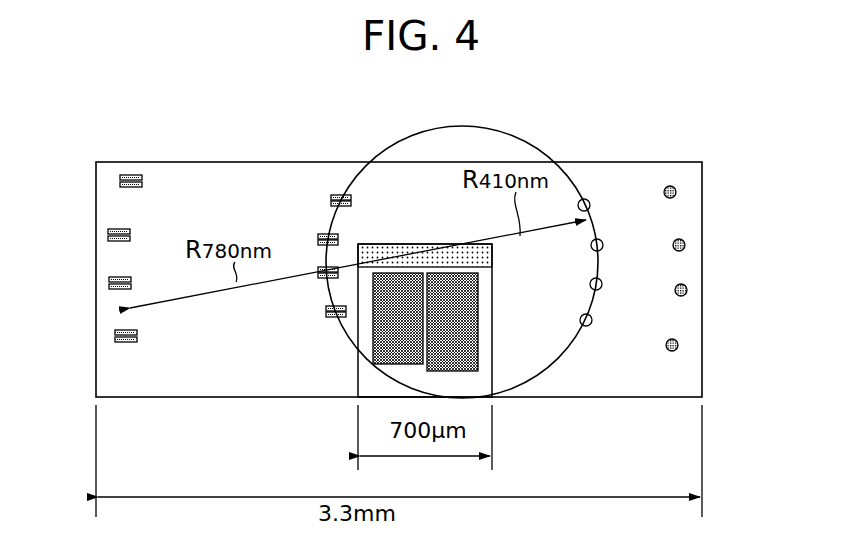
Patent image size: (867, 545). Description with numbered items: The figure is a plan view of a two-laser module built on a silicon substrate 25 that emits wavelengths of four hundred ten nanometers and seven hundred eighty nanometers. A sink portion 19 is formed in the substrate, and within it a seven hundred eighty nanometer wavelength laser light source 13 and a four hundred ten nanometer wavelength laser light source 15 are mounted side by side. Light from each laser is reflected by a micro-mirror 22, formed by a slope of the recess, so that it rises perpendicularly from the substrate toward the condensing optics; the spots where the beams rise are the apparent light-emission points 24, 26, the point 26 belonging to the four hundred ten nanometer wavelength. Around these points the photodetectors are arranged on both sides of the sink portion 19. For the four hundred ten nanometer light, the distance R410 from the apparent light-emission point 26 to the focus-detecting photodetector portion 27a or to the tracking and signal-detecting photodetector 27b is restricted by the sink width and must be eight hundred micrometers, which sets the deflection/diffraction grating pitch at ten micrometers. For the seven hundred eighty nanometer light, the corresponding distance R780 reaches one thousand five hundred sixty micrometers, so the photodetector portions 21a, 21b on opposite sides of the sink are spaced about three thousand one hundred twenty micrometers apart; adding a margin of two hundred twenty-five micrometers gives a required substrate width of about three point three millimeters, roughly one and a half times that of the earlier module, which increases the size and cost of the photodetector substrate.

The 780 nm wavelength laser light source 13 is at (373, 336).
The 410 nm wavelength laser light source 15 is at (478, 342).
The sink portion 19 is at (372, 381).
The photodetector portion for 780 nm wavelength 21a is at (109, 282).
The photodetector portion for 780 nm wavelength 21b is at (686, 245).
The micro-mirror 22 is at (494, 258).
The apparent light-emission point 24 is at (396, 252).
The silicon substrate 25 is at (686, 375).
The apparent light-emission point for the 410 nm wavelength 26 is at (450, 255).
The focus-detecting photodetector portion 27a is at (331, 200).
The tracking and signal-detecting photodetector 27b is at (596, 238).